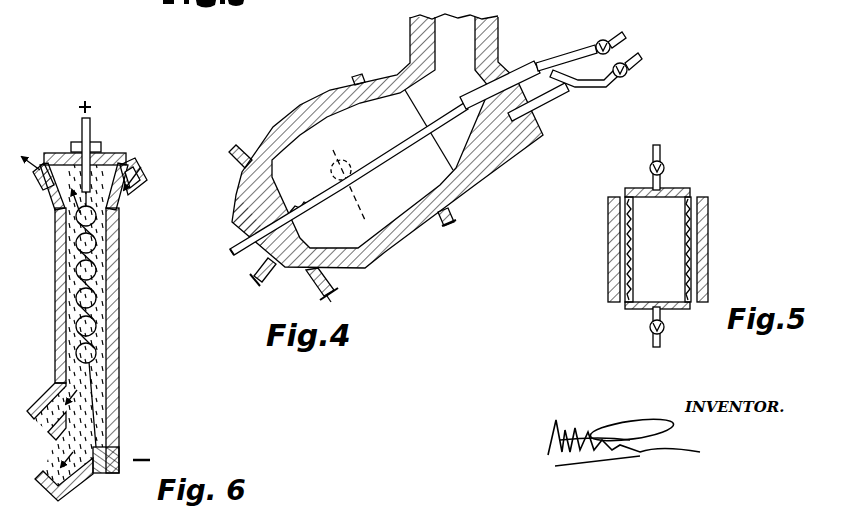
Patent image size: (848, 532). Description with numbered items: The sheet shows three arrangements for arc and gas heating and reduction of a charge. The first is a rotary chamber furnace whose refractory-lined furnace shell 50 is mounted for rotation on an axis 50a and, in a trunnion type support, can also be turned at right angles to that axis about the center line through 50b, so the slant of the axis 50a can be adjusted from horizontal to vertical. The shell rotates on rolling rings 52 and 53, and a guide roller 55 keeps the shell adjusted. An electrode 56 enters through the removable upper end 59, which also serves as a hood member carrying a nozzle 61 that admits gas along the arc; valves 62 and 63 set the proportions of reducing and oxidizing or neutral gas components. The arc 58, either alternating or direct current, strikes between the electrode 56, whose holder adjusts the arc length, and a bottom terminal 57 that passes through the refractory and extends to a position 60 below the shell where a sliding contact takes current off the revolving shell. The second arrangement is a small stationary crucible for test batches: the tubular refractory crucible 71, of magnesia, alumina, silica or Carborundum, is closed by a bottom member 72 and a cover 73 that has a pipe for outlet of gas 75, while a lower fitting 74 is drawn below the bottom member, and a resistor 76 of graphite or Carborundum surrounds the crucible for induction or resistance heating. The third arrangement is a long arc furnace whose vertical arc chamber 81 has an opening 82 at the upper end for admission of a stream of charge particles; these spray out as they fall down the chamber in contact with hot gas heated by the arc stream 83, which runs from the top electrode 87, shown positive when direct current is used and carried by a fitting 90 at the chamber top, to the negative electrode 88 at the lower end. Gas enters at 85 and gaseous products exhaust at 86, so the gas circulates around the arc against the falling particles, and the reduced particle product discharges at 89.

In FIG. 4, the furnace shell 50 is at (303, 110).
In FIG. 4, the axis 50a is at (560, 58).
In FIG. 4, the center line 50b is at (290, 85).
In FIG. 4, the rolling ring 52 is at (331, 293).
In FIG. 4, the rolling ring 53 is at (443, 225).
In FIG. 4, the guide roller 55 is at (259, 283).
In FIG. 4, the electrode 56 is at (400, 146).
In FIG. 4, the bottom terminal 57 is at (236, 238).
In FIG. 4, the arc 58 is at (308, 198).
In FIG. 4, the upper end 59 is at (447, 56).
In FIG. 4, the position below the shell 60 is at (237, 260).
In FIG. 4, the nozzle 61 is at (546, 101).
In FIG. 4, the valve 62 is at (603, 40).
In FIG. 4, the valve 63 is at (628, 73).
In FIG. 5, the refractory crucible 71 is at (685, 220).
In FIG. 5, the bottom member 72 is at (676, 316).
In FIG. 5, the cover 73 is at (675, 182).
In FIG. 5, the bottom valve 74 is at (652, 323).
In FIG. 5, the pipe for outlet of gas 75 is at (651, 176).
In FIG. 5, the resistor 76 is at (708, 250).
In FIG. 6, the vertical arc chamber 81 is at (114, 324).
In FIG. 6, the opening 82 is at (143, 172).
In FIG. 6, the arc stream 83 is at (108, 310).
In FIG. 6, the gas entry 85 is at (44, 401).
In FIG. 6, the gas exhaust 86 is at (55, 182).
In FIG. 6, the top electrode 87 is at (81, 122).
In FIG. 6, the negative electrode 88 is at (113, 446).
In FIG. 6, the particle product discharge 89 is at (53, 487).
In FIG. 6, the flange 90 is at (73, 145).